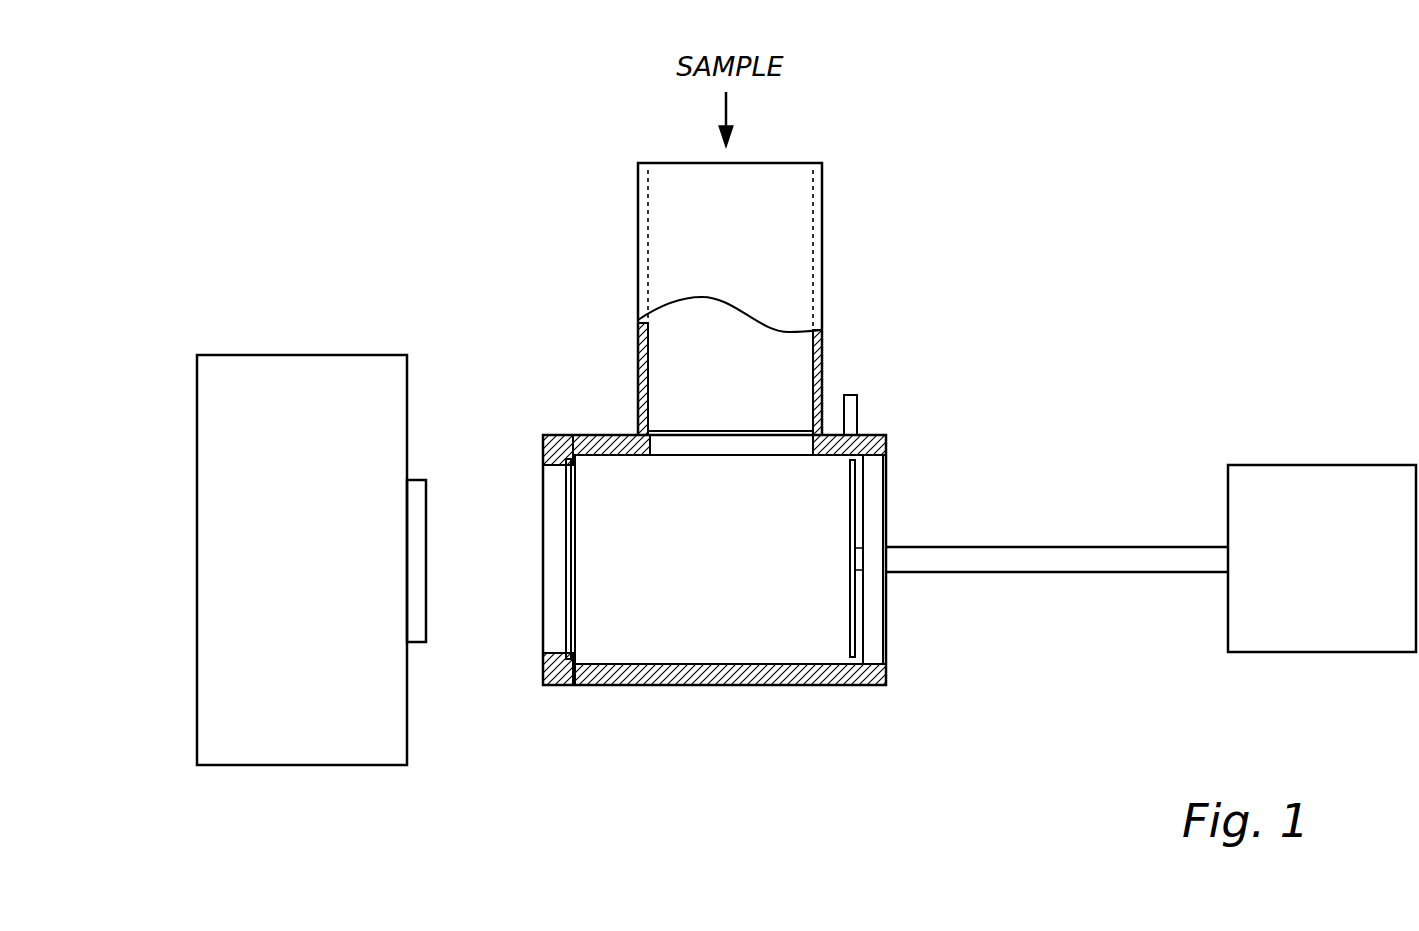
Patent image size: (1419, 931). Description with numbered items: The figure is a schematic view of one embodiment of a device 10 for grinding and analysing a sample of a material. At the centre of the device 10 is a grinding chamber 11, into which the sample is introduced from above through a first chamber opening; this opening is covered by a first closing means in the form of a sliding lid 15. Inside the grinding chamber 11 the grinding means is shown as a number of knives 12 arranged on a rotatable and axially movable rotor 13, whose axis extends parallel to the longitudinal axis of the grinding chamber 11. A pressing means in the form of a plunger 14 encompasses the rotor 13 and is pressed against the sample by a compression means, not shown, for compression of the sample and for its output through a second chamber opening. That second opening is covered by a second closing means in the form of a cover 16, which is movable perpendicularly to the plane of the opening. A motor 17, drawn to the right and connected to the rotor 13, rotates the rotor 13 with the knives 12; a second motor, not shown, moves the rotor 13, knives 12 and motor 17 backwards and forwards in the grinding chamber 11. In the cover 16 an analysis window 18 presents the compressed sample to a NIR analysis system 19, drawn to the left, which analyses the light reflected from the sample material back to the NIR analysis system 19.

The device 10 is at (953, 328).
The grinding chamber 11 is at (712, 561).
The knives 12 is at (850, 597).
The rotor 13 is at (1052, 573).
The plunger 14 is at (863, 512).
The sliding lid 15 is at (720, 433).
The cover 16 is at (543, 632).
The motor 17 is at (1320, 465).
The analysis window 18 is at (576, 539).
The NIR analysis system 19 is at (289, 355).